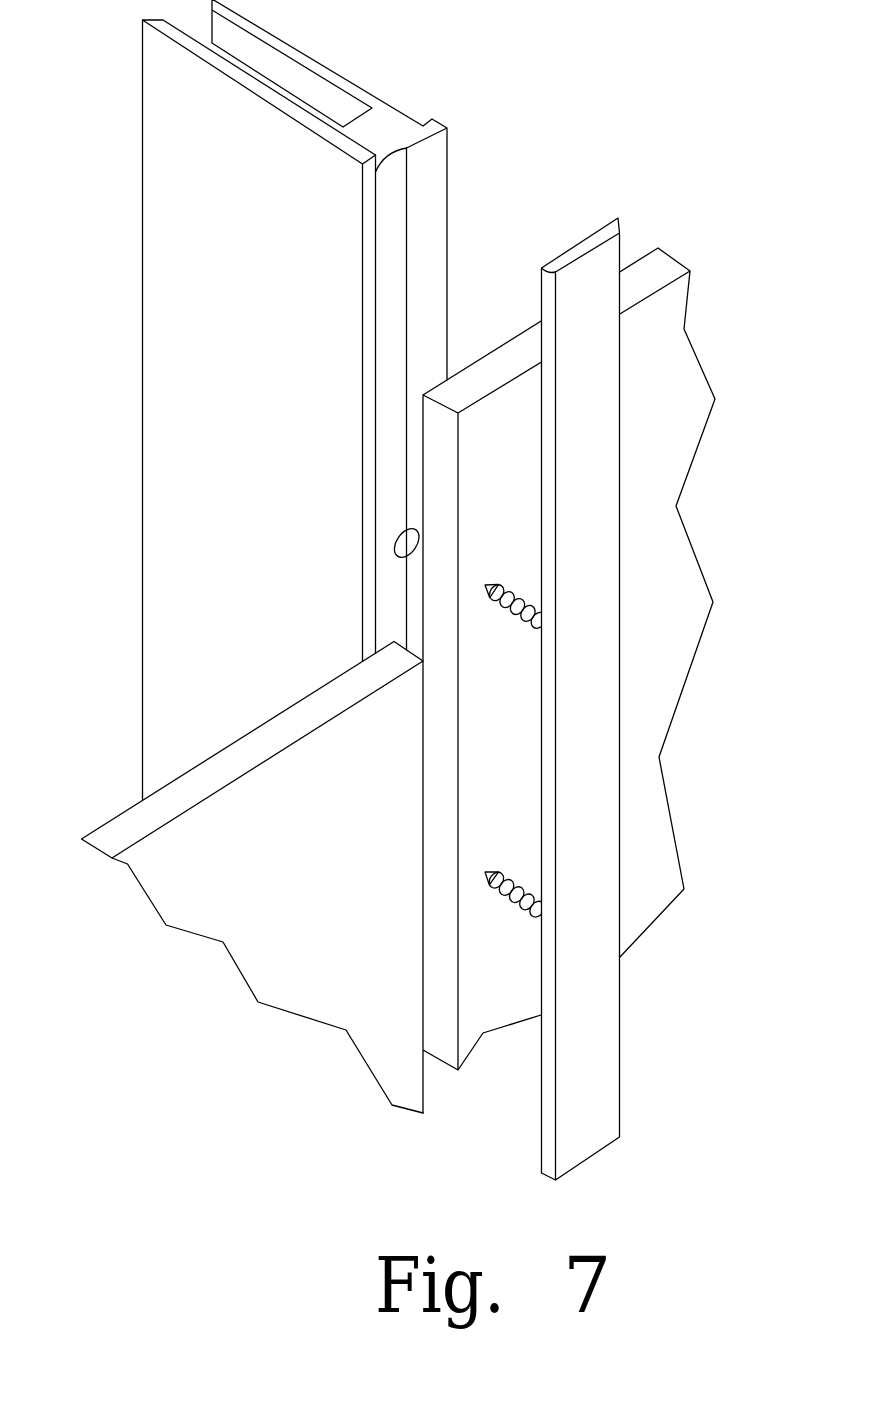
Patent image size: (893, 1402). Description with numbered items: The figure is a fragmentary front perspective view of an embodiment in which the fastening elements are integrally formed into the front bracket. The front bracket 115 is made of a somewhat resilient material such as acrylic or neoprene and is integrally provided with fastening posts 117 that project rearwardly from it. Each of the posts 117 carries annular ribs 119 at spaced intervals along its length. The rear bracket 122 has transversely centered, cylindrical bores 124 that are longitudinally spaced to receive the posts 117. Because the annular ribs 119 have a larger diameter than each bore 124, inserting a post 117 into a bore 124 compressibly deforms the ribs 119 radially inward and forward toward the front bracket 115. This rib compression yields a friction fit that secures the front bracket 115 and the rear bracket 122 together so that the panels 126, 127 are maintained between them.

The front bracket 115 is at (600, 423).
The fastening posts 117 is at (519, 706).
The annular ribs 119 is at (519, 588).
The rear bracket 122 is at (385, 90).
The cylindrical bores 124 is at (398, 557).
The panel 126 is at (311, 997).
The panel 127 is at (680, 368).